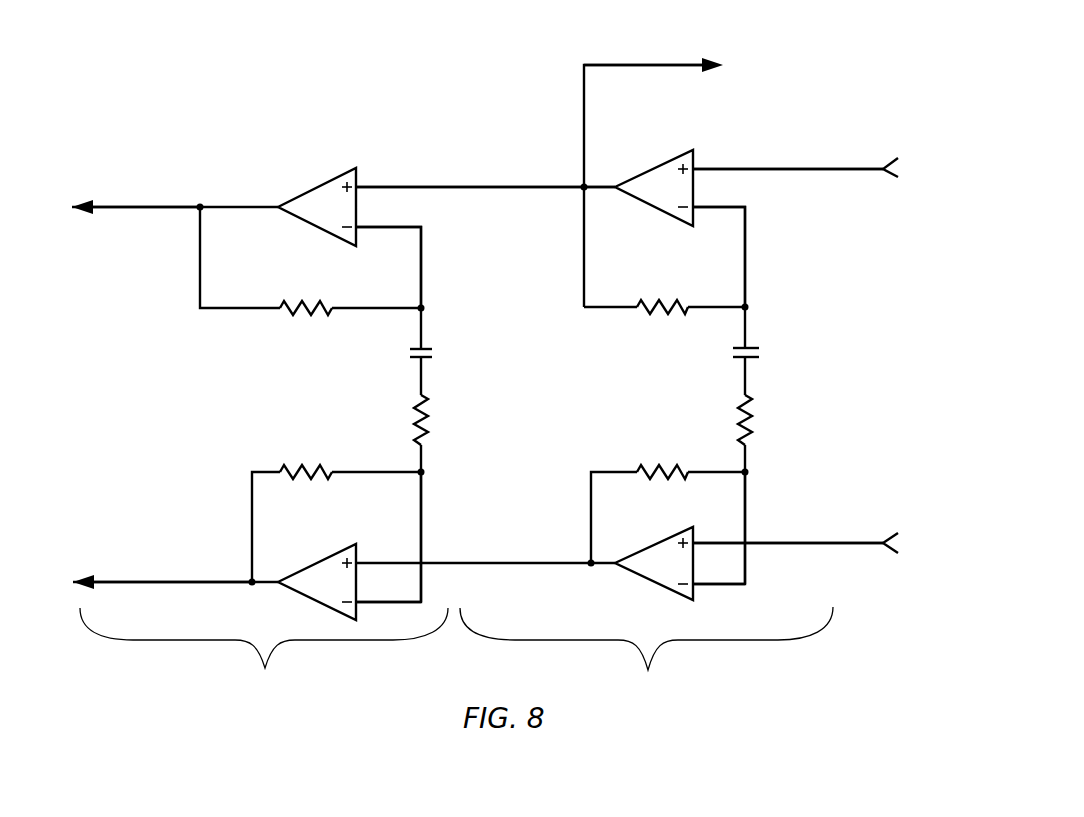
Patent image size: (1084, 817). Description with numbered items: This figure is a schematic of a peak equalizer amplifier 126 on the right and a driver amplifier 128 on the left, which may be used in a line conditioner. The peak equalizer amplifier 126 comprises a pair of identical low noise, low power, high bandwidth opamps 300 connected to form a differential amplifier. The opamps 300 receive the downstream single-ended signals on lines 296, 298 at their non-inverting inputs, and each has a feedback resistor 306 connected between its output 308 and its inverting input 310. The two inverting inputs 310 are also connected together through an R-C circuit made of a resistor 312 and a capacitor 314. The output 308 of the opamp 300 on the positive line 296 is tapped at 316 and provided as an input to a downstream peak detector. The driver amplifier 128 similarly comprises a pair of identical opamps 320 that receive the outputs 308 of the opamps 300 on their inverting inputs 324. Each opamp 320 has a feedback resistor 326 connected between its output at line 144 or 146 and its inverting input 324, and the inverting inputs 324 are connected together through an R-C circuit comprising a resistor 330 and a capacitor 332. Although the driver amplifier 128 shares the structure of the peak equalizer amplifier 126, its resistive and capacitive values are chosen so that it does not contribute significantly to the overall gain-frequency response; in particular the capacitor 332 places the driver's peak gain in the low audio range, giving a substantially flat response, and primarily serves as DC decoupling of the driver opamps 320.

The peak equalizer amplifier 126 is at (646, 650).
The driver amplifier 128 is at (264, 651).
The output line 144 is at (128, 174).
The output line 146 is at (158, 560).
The positive line 296 is at (789, 137).
The line 298 is at (815, 512).
The opamp 300 is at (637, 365).
The feedback resistor 306 is at (653, 395).
The output 308 is at (485, 159).
The inverting input 310 is at (768, 411).
The resistor 312 is at (735, 413).
The capacitor 314 is at (780, 332).
The tap 316 is at (665, 40).
The opamp 320 is at (301, 377).
The inverting input 324 is at (429, 422).
The feedback resistor 326 is at (309, 393).
The resistor 330 is at (419, 420).
The capacitor 332 is at (456, 332).